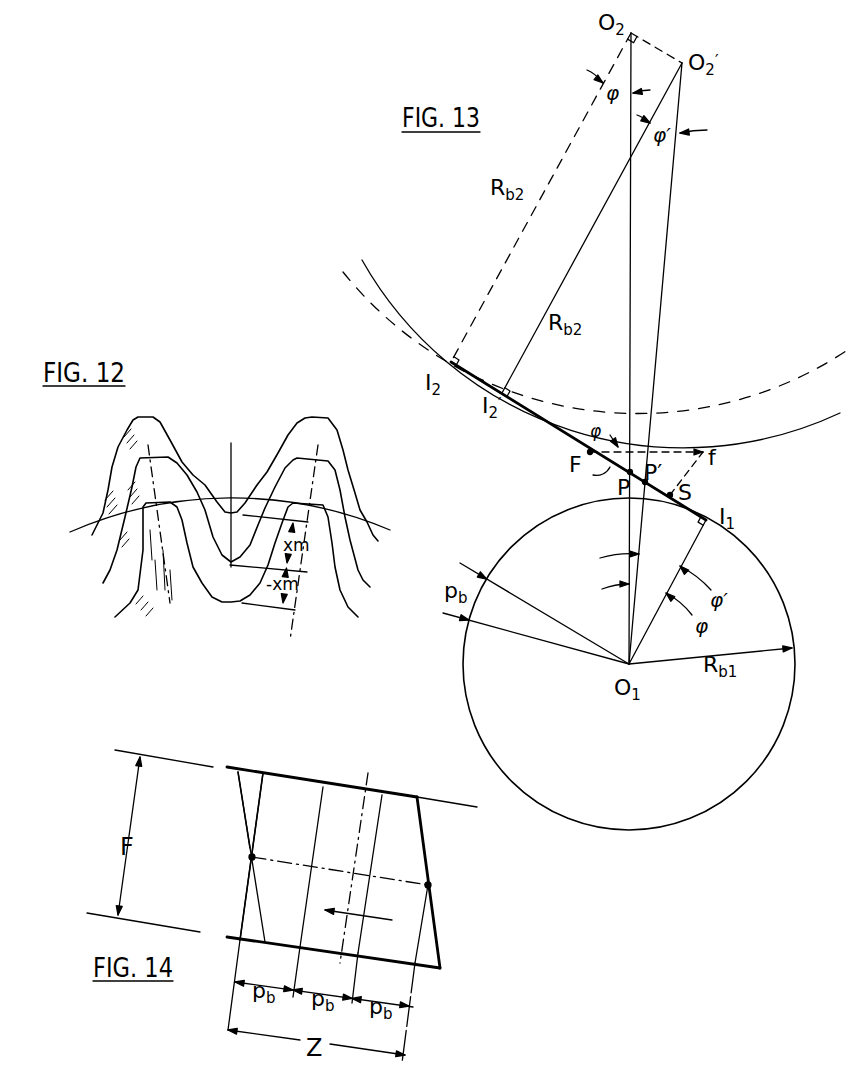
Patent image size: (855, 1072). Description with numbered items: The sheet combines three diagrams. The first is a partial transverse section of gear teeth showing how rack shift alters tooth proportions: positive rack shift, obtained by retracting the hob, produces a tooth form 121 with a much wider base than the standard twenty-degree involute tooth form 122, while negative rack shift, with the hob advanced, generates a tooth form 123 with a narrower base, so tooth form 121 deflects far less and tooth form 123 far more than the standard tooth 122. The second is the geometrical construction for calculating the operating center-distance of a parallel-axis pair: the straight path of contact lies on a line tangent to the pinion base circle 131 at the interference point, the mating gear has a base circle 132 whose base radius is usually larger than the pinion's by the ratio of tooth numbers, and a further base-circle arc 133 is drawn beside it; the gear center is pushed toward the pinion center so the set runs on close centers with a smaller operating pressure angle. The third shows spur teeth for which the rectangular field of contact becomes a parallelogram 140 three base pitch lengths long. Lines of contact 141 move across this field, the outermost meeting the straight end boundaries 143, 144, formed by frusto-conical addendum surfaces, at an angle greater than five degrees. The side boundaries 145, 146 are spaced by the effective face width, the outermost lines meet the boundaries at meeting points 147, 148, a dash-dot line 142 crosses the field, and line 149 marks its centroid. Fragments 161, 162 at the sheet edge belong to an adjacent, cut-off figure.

In FIG. 12, the tooth form 121 is at (110, 460).
In FIG. 12, the standard tooth form 122 is at (120, 550).
In FIG. 12, the tooth form 123 is at (122, 605).
In FIG. 13, the pinion base circle 131 is at (788, 610).
In FIG. 13, the base circle 132 is at (400, 328).
In FIG. 13, the base circle of second gear (second position) 133 is at (418, 327).
In FIG. 14, the parallelogram field of contact 140 is at (390, 820).
In FIG. 14, the contact lines 141 is at (258, 796).
In FIG. 14, the center line 142 is at (368, 773).
In FIG. 14, the end boundary 143 is at (436, 935).
In FIG. 14, the end boundary 144 is at (247, 817).
In FIG. 14, the side boundary 145 is at (280, 773).
In FIG. 14, the side boundary 146 is at (420, 985).
In FIG. 14, the meeting point 147 is at (428, 885).
In FIG. 14, the meeting point 148 is at (252, 857).
In FIG. 14, the centroid 149 is at (353, 863).
In FIG. 14, the fragment (adjacent figure) 161 is at (652, 1066).
In FIG. 14, the fragment (adjacent figure) 162 is at (738, 1062).